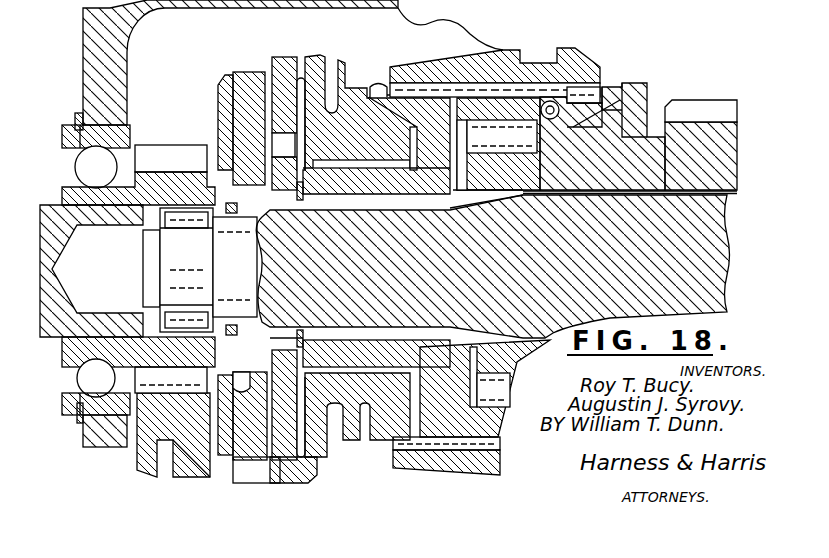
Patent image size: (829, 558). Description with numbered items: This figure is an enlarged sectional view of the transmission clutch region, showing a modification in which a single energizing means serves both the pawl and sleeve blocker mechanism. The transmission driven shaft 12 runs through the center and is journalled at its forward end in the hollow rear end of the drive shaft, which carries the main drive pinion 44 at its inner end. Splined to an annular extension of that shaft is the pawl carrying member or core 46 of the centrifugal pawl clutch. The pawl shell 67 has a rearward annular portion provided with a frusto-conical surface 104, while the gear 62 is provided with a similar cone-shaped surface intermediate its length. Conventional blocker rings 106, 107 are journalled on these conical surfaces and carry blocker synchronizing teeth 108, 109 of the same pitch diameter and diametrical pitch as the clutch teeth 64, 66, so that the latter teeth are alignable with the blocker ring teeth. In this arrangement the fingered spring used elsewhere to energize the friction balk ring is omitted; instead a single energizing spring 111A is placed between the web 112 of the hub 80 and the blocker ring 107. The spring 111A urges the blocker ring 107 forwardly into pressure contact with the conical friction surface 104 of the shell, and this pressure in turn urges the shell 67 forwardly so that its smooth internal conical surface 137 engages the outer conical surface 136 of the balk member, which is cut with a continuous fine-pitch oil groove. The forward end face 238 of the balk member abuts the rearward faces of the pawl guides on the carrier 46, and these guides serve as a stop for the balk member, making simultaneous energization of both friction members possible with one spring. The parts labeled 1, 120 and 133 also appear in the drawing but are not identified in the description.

The bearing carrier housing 1 is at (572, 50).
The transmission driven shaft 12 is at (622, 261).
The main drive pinion 44 is at (175, 132).
The pawl carrying member 46 is at (225, 77).
The gear 62 is at (698, 107).
The clutch teeth 64 is at (640, 82).
The clutch teeth 66 is at (370, 93).
The pawl shell 67 is at (322, 55).
The hub 80 is at (360, 267).
The frusto-conical surface 104 is at (405, 140).
The blocker ring 106 is at (618, 83).
The blocker ring 107 is at (377, 95).
The blocker synchronizing teeth 108 is at (607, 90).
The blocker synchronizing teeth 109 is at (403, 85).
The single energizing spring 111A is at (397, 97).
The web 112 is at (415, 132).
The plate 120 is at (248, 113).
The hub 133 is at (325, 118).
The outer conical surface 136 is at (278, 78).
The internal conical surface 137 is at (318, 57).
The forward end face 238 is at (237, 75).